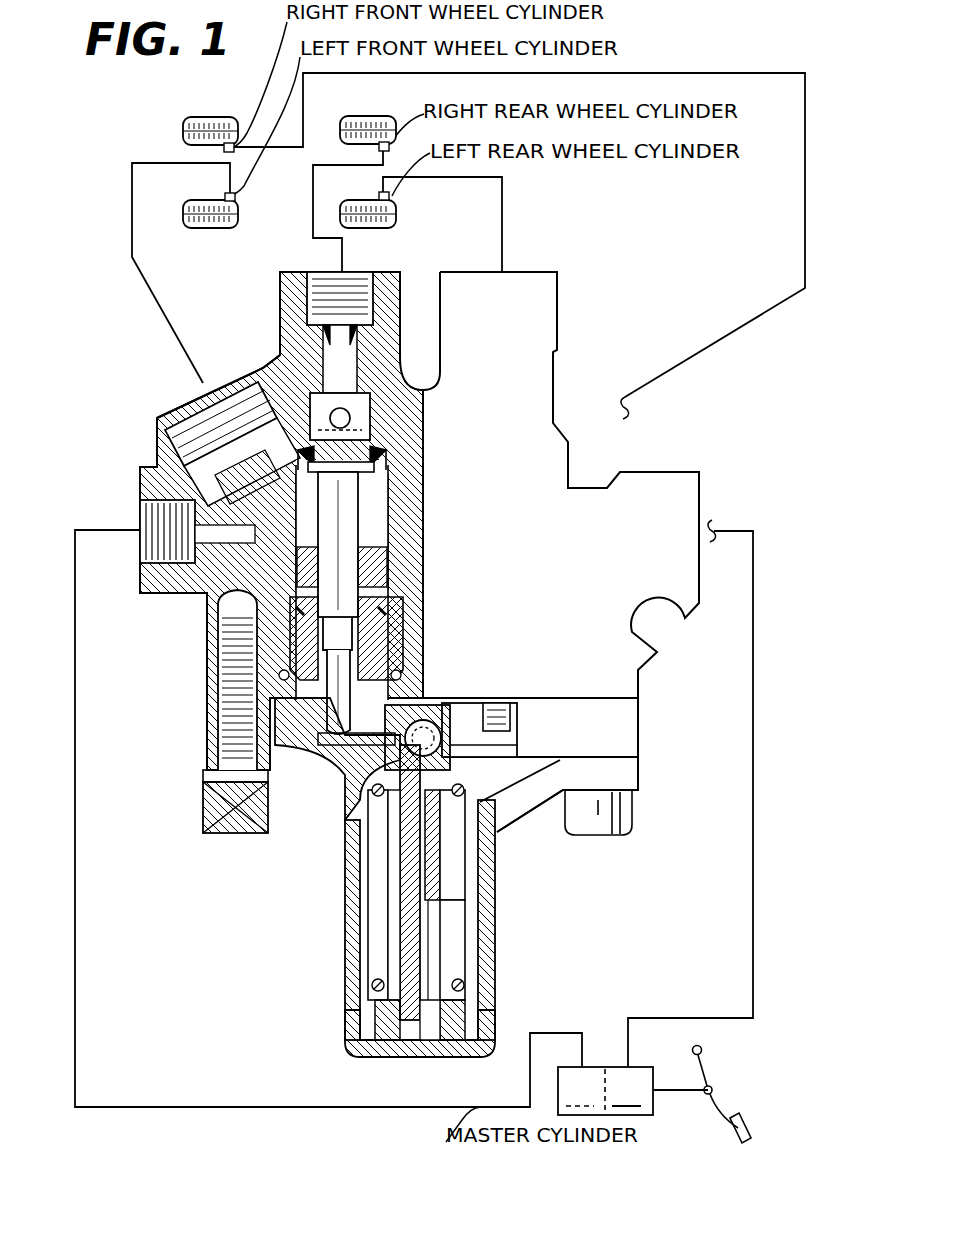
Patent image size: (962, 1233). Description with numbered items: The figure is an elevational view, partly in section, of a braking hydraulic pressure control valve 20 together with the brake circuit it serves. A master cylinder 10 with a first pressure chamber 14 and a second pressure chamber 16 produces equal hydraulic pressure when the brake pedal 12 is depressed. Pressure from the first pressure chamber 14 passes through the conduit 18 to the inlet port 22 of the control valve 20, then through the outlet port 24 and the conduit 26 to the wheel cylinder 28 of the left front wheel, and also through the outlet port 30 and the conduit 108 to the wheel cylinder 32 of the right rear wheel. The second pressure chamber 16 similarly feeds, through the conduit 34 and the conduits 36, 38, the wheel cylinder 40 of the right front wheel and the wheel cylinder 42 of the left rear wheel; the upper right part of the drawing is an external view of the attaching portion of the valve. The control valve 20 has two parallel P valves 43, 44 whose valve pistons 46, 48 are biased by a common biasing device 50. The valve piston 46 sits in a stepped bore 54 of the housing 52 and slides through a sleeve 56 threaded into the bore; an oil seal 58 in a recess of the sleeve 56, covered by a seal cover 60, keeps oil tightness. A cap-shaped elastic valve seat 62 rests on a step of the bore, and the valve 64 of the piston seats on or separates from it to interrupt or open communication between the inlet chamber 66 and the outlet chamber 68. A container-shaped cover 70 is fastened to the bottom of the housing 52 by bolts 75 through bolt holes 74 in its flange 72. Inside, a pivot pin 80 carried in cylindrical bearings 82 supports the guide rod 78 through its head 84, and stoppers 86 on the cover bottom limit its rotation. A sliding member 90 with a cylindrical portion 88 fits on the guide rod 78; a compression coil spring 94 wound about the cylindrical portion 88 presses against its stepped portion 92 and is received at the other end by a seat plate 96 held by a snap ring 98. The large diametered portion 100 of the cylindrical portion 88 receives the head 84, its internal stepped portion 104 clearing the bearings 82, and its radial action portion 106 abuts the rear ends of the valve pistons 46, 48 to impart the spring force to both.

The master cylinder 10 is at (602, 1066).
The brake pedal 12 is at (718, 1102).
The first pressure chamber 14 is at (585, 1091).
The second pressure chamber 16 is at (660, 1094).
The conduit 18 is at (77, 953).
The braking hydraulic pressure control valve 20 is at (648, 305).
The inlet port 22 is at (157, 520).
The outlet port 24 is at (200, 400).
The conduit 26 is at (157, 318).
The wheel cylinder 28 is at (228, 196).
The outlet port 30 is at (352, 292).
The wheel cylinder 32 is at (385, 140).
The conduit 34 is at (753, 945).
The conduit 36 is at (753, 315).
The conduit 38 is at (504, 216).
The wheel cylinder 40 is at (228, 147).
The wheel cylinder 42 is at (392, 200).
The P valve 43 is at (270, 300).
The P valve 44 is at (580, 310).
The valve piston 46 is at (325, 717).
The valve piston 48 is at (508, 712).
The biasing device 50 is at (634, 758).
The housing 52 is at (270, 368).
The stepped bore 54 is at (425, 522).
The sleeve 56 is at (413, 627).
The oil seal 58 is at (415, 580).
The seal cover 60 is at (413, 550).
The valve seat 62 is at (378, 458).
The valve 64 is at (378, 425).
The inlet chamber 66 is at (372, 500).
The outlet chamber 68 is at (372, 440).
The cover 70 is at (495, 893).
The flange 72 is at (636, 720).
The bolt hole 74 is at (215, 738).
The bolt 75 is at (630, 812).
The guide rod 78 is at (442, 937).
The pivot pin 80 is at (423, 730).
The cylindrical bearing 82 is at (432, 700).
The head 84 is at (400, 713).
The stopper 86 is at (372, 1027).
The cylindrical portion 88 is at (398, 880).
The sliding member 90 is at (453, 848).
The stepped portion 92 is at (453, 820).
The compression coil spring 94 is at (372, 983).
The seat plate 96 is at (370, 997).
The snap ring 98 is at (465, 1003).
The large diametered portion 100 is at (370, 778).
The internal stepped portion 104 is at (398, 850).
The action portion 106 is at (490, 777).
The conduit 108 is at (312, 197).